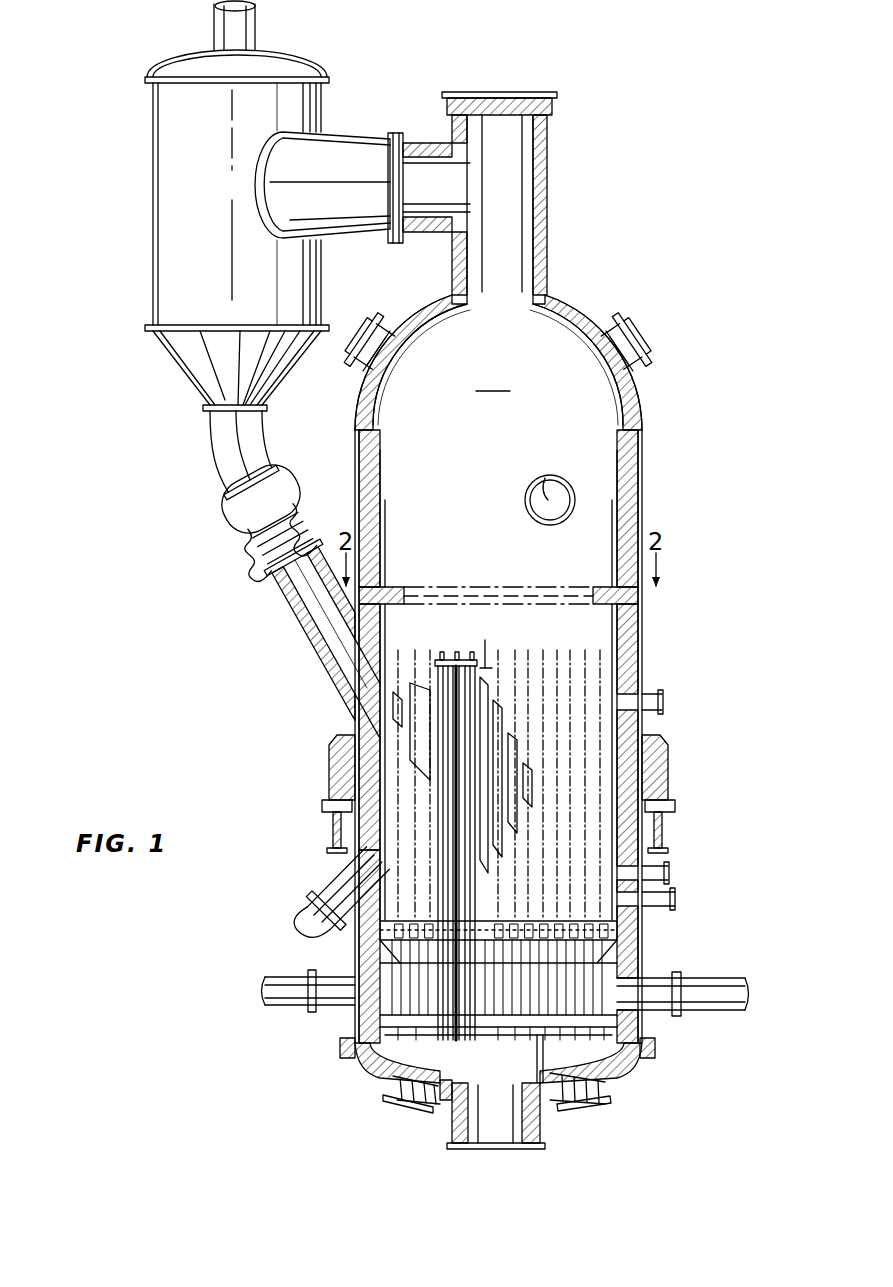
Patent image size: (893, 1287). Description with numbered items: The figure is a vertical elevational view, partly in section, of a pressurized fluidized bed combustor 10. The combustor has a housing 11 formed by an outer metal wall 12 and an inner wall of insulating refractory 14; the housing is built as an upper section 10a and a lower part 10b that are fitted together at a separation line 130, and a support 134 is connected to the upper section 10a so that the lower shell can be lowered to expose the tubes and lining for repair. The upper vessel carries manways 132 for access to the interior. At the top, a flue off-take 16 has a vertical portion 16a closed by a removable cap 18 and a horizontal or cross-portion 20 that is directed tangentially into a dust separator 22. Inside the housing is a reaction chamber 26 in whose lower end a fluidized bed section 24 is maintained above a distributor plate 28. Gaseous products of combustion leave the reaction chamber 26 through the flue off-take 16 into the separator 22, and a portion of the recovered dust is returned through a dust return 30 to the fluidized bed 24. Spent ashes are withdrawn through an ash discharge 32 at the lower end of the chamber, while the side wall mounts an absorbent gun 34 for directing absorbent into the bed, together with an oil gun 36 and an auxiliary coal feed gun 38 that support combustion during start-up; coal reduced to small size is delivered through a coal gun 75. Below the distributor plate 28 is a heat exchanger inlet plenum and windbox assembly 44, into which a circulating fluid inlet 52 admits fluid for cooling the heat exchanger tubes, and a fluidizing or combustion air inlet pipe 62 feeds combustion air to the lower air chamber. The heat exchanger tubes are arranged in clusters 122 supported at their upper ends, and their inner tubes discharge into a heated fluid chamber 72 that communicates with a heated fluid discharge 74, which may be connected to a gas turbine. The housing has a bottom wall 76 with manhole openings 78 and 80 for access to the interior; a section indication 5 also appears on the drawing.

The pressurized fluidized bed combustor 10 is at (716, 282).
The upper section 10a is at (643, 470).
The lower part of the housing 10b is at (648, 1065).
The housing 11 is at (636, 656).
The outer metal wall 12 is at (643, 500).
The refractory 14 is at (632, 522).
The flue off-take 16 is at (549, 216).
The vertical portion 16a is at (515, 190).
The removable cap 18 is at (520, 106).
The horizontal or cross-portion 20 is at (430, 155).
The dust separator 22 is at (292, 110).
The fluidized bed section 24 is at (590, 757).
The reaction chamber 26 is at (493, 378).
The distributor plate 28 is at (612, 930).
The dust return 30 is at (296, 624).
The ash discharge 32 is at (318, 884).
The absorbent gun 34 is at (664, 704).
The oil gun 36 is at (670, 872).
The auxiliary coal feed gun 38 is at (678, 900).
The windbox assembly 44 is at (640, 956).
The circulating fluid inlet 52 is at (720, 985).
The fluidizing or combustion air inlet pipe 62 is at (280, 982).
The heated fluid chamber 72 is at (405, 1052).
The heated fluid discharge 74 is at (452, 1122).
The coal gun 75 is at (545, 1050).
The bottom wall 76 is at (452, 1084).
The manhole opening 78 is at (400, 1108).
The manhole opening 80 is at (590, 1112).
The tube clusters 122 is at (436, 656).
The section line 5 is at (474, 640).
The separation line 130 is at (656, 1048).
The manways 132 is at (642, 350).
The support 134 is at (670, 780).